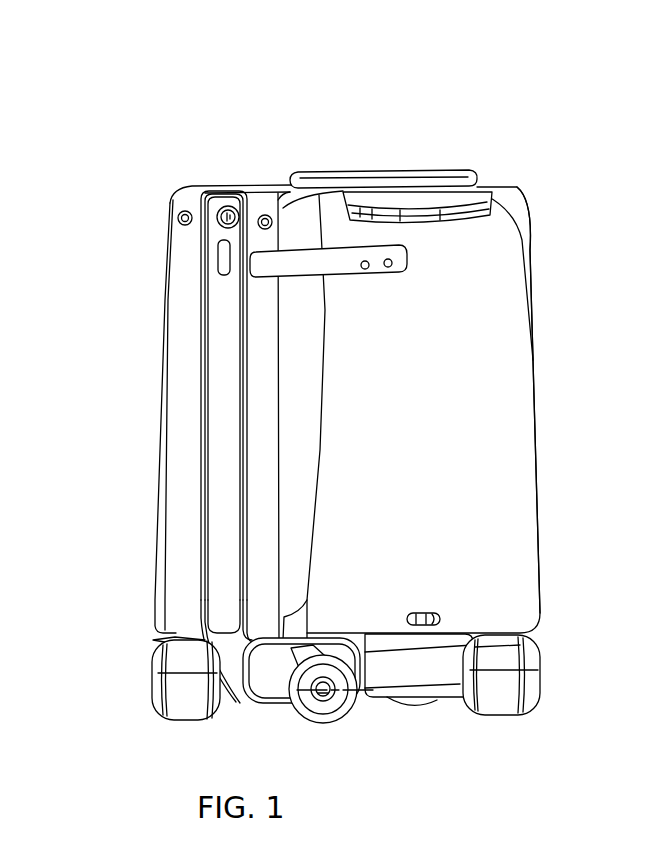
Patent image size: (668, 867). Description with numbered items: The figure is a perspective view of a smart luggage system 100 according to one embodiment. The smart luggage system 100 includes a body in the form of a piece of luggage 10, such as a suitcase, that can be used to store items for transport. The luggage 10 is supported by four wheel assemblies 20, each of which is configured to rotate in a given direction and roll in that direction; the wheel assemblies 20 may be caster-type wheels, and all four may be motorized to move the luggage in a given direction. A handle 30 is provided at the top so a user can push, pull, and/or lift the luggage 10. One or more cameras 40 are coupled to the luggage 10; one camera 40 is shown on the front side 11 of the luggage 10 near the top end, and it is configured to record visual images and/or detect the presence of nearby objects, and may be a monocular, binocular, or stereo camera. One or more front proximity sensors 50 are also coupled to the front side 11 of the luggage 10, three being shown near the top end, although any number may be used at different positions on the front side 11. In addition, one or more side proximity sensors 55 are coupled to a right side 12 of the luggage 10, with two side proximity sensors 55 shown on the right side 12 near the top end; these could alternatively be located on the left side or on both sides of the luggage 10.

The smart luggage system 100 is at (569, 131).
The luggage 10 is at (517, 437).
The front side 11 is at (189, 438).
The right side 12 is at (505, 507).
The wheel assembly 20 is at (185, 709).
The handle 30 is at (423, 170).
The camera 40 is at (222, 205).
The front proximity sensor 50 is at (258, 226).
The side proximity sensor 55 is at (367, 270).